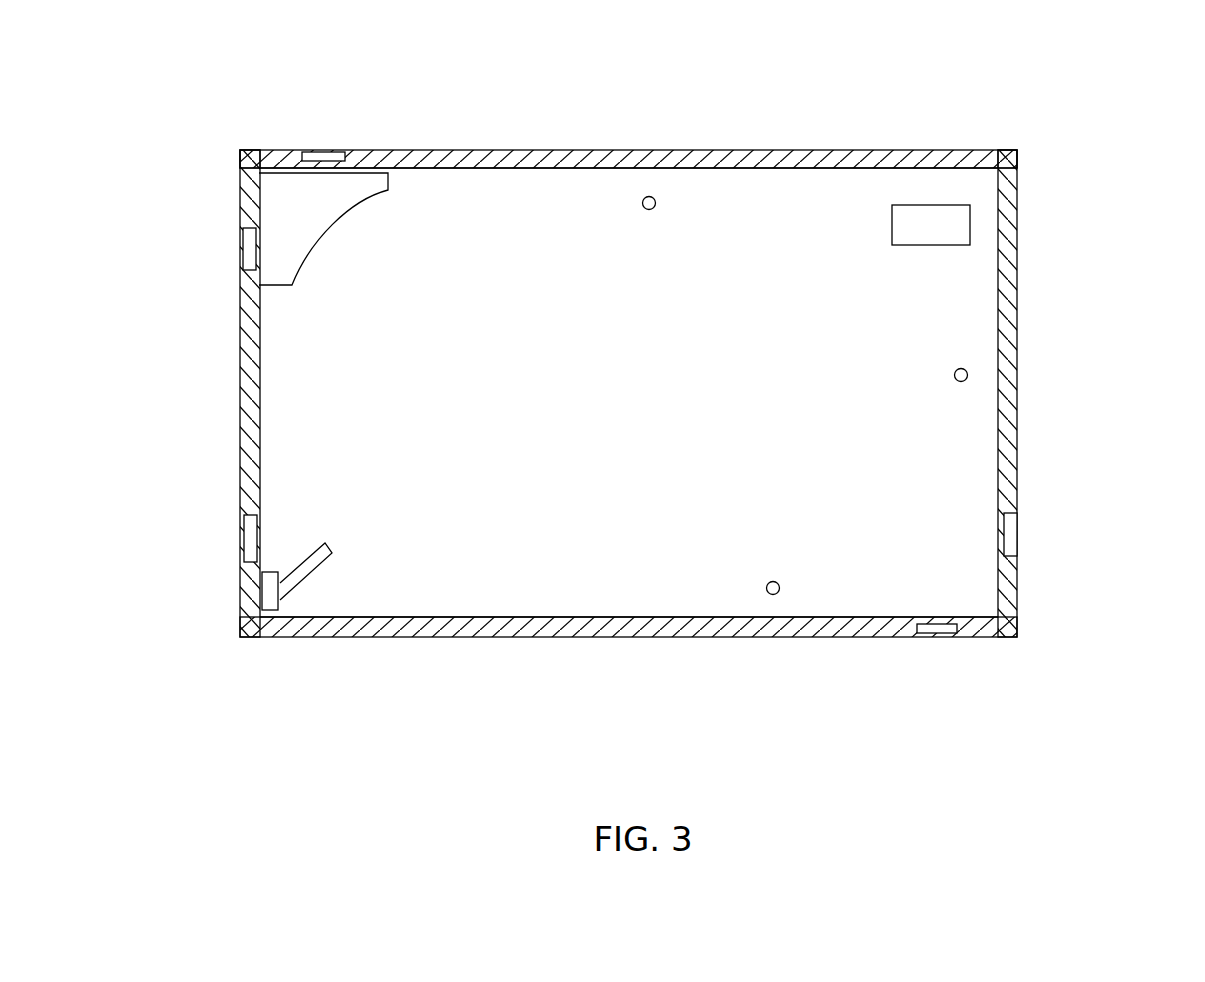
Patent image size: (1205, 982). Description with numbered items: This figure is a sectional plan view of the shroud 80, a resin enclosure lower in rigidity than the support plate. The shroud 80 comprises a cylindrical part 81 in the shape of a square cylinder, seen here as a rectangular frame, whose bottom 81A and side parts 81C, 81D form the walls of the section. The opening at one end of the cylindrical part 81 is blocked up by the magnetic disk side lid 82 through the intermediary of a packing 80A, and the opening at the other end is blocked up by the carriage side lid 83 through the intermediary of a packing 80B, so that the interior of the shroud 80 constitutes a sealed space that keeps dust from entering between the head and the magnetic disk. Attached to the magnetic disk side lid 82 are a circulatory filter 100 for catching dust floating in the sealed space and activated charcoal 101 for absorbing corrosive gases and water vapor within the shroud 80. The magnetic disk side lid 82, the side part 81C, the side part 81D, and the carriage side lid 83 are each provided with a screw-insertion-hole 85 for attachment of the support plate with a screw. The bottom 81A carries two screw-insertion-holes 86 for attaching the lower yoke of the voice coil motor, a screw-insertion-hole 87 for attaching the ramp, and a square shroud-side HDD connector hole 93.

The shroud 80 is at (627, 397).
The packing 80A is at (248, 150).
The packing 80B is at (1004, 150).
The cylindrical part 81 is at (628, 105).
The bottom 81A is at (647, 588).
The side part 81C is at (490, 162).
The side part 81D is at (628, 669).
The magnetic disk side lid 82 is at (242, 373).
The carriage side lid 83 is at (1010, 420).
The screw-insertion-hole 85 is at (325, 152).
The screw-insertion-hole 86 is at (968, 373).
The screw-insertion-hole 87 is at (649, 196).
The shroud-side HDD connector hole 93 is at (945, 228).
The circulatory filter 100 is at (315, 637).
The activated charcoal 101 is at (282, 203).